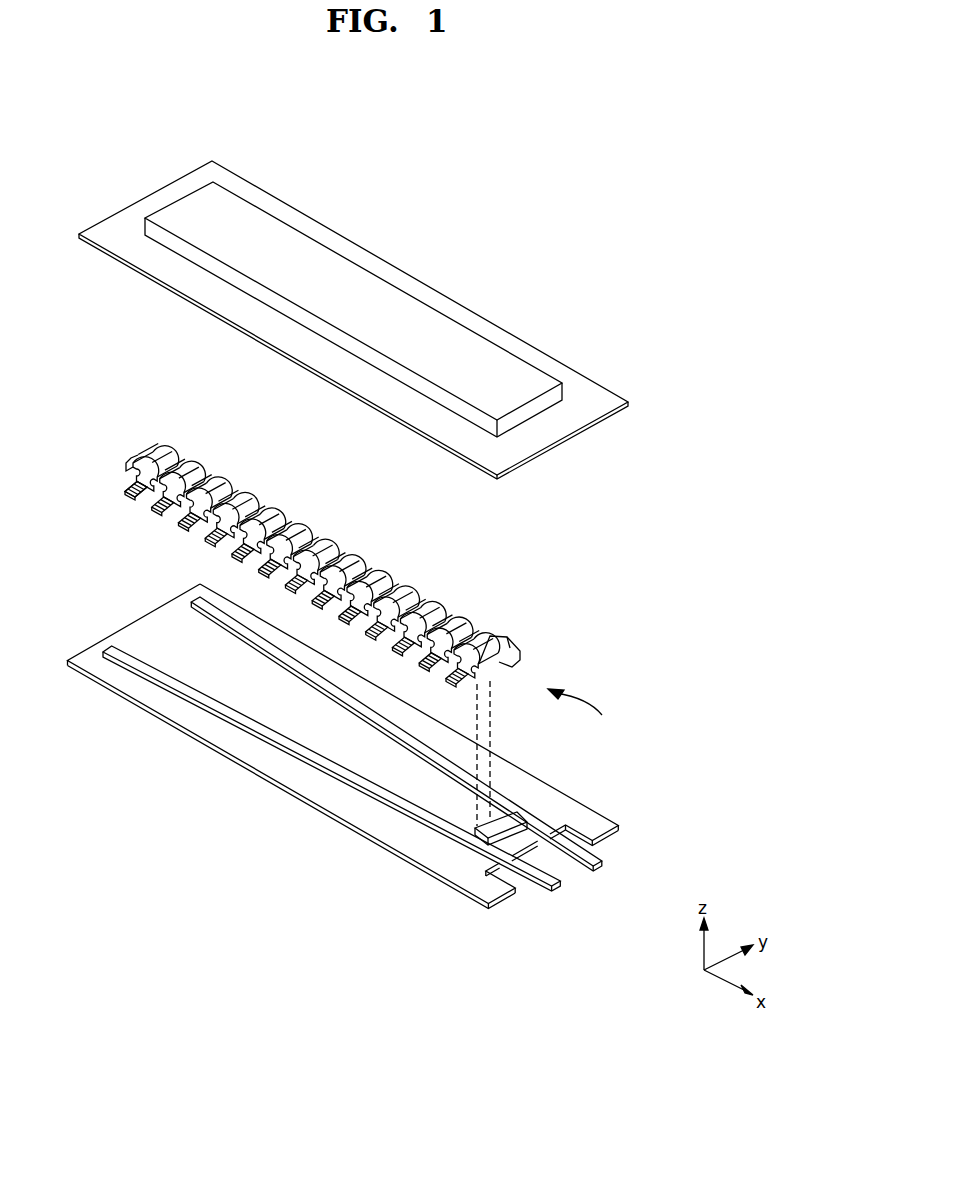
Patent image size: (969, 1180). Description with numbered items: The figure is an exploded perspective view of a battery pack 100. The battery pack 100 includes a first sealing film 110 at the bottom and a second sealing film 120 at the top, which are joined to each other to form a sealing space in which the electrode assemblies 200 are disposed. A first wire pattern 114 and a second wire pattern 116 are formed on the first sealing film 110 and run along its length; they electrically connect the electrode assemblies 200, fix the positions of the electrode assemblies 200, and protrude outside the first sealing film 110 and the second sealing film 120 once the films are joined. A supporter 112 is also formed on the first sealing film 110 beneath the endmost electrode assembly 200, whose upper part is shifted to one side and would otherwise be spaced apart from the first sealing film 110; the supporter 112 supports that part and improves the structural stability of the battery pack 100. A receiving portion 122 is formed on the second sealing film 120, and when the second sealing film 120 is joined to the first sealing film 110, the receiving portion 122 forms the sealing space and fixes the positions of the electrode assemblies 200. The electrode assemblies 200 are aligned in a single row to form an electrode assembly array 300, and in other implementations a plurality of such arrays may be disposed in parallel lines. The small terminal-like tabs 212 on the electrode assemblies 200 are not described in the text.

The battery pack 100 is at (718, 216).
The first sealing film 110 is at (593, 833).
The supporter 112 is at (477, 842).
The first wire pattern 114 is at (108, 652).
The second wire pattern 116 is at (197, 603).
The second sealing film 120 is at (597, 395).
The receiving portion 122 is at (522, 373).
The electrode assembly 200 is at (292, 561).
The connector terminal 212 is at (126, 492).
The electrode assembly array 300 is at (587, 717).